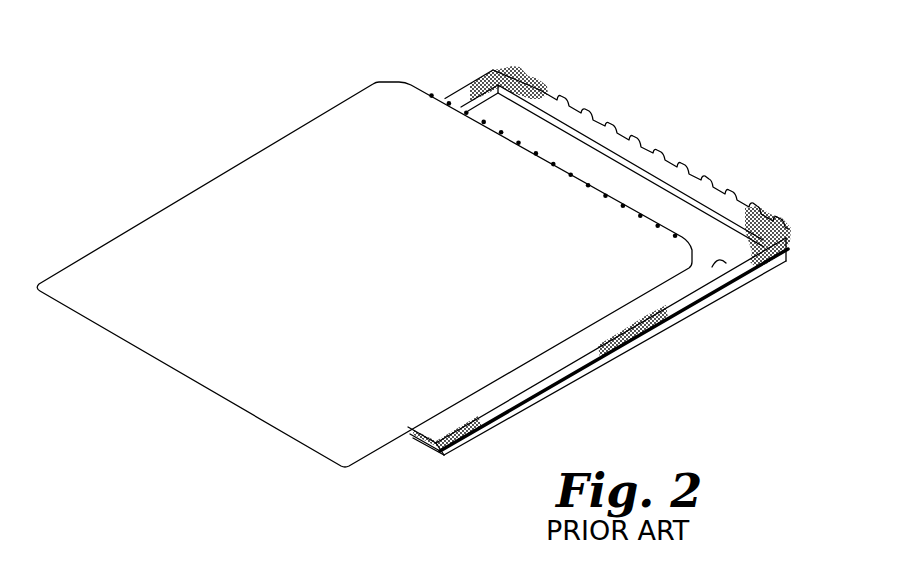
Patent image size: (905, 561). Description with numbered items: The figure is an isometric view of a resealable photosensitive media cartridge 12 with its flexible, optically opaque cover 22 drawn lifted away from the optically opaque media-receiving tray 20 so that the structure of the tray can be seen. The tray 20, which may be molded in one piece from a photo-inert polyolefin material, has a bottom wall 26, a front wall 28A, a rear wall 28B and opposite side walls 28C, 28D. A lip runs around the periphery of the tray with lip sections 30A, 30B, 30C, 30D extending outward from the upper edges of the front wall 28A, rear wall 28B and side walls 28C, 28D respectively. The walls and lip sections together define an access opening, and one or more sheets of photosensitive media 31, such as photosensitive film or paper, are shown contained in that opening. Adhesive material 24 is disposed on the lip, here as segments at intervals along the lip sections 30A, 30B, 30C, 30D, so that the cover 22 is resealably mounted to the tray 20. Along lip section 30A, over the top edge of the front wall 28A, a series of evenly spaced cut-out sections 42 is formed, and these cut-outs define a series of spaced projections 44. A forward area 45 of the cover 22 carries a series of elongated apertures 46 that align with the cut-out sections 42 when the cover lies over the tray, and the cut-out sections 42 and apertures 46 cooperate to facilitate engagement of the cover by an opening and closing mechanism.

The cartridge 12 is at (670, 48).
The media-receiving tray 20 is at (685, 152).
The cover 22 is at (180, 215).
The adhesive material 24 is at (527, 82).
The bottom wall 26 is at (717, 302).
The front wall 28A is at (612, 140).
The rear wall 28B is at (442, 456).
The side wall 28C is at (492, 70).
The side wall 28D is at (720, 262).
The lip section 30A is at (562, 108).
The lip section 30B is at (410, 436).
The lip section 30C is at (458, 95).
The lip section 30D is at (558, 378).
The photosensitive media 31 is at (710, 223).
The cut-out sections 42 is at (670, 162).
The projections 44 is at (744, 203).
The forward area 45 is at (420, 82).
The elongated apertures 46 is at (429, 90).